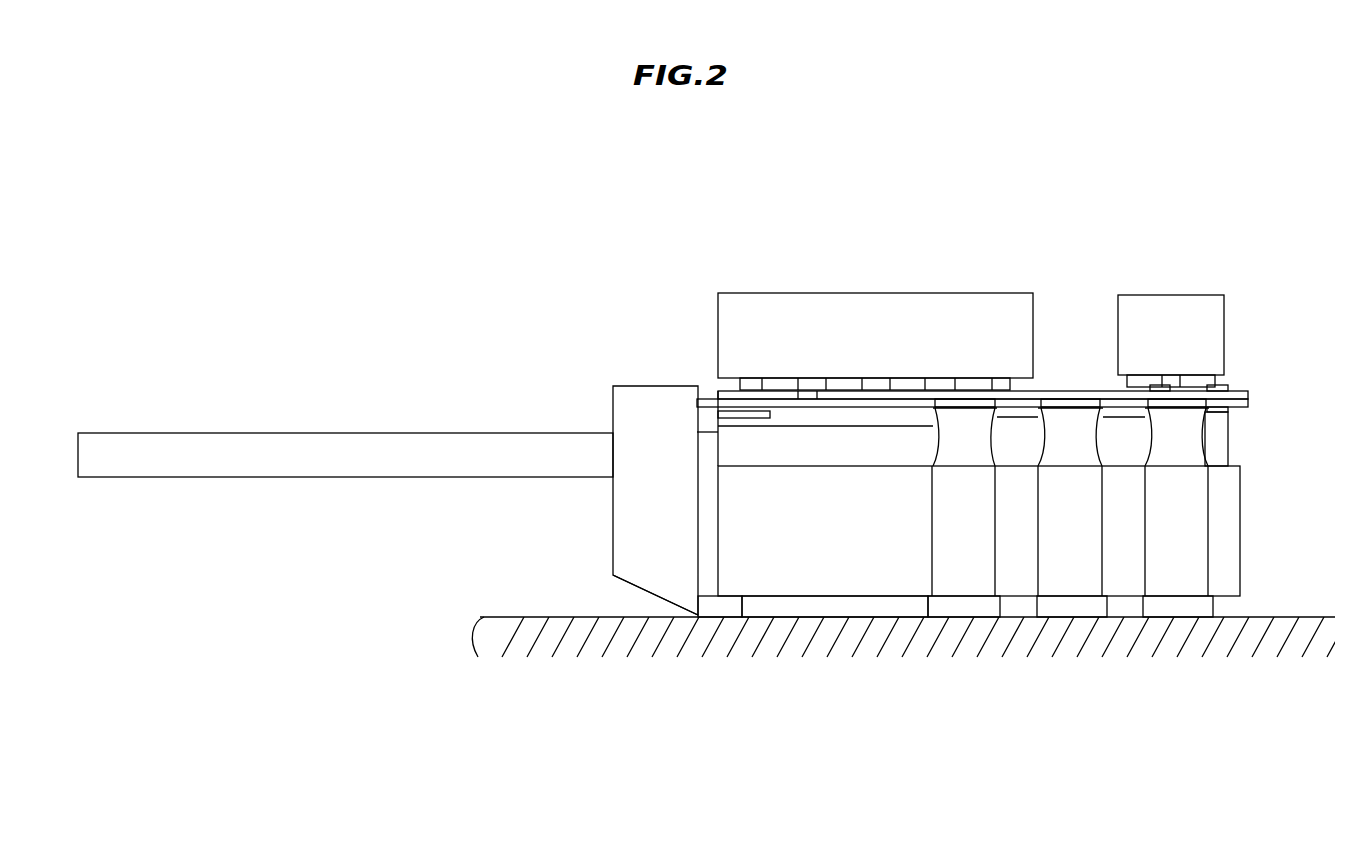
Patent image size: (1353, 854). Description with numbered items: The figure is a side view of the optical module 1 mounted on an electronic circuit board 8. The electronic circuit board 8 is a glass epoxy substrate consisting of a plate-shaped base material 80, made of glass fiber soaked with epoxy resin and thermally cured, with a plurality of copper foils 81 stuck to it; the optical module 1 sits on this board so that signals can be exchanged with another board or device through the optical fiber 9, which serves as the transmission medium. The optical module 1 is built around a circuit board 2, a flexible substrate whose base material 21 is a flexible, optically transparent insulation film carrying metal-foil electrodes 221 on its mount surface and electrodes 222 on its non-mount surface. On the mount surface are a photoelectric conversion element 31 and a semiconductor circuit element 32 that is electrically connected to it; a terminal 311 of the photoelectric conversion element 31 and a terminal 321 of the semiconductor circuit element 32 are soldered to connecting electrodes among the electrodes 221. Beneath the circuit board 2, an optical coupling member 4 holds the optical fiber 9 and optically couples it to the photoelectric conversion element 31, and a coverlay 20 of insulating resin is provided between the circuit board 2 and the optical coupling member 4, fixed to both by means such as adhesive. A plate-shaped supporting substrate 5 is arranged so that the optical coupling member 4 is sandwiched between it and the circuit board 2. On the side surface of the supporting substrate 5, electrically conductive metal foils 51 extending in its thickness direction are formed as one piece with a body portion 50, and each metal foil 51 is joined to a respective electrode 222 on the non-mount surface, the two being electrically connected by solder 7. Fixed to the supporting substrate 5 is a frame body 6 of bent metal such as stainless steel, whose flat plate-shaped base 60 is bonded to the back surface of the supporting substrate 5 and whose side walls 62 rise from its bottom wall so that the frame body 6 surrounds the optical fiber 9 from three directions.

The optical module 1 is at (1262, 237).
The circuit board 2 is at (714, 381).
The coverlay 20 is at (1218, 413).
The base material 21 is at (1237, 397).
The electrodes 221 is at (842, 393).
The electrodes 222 is at (967, 410).
The photoelectric conversion element 31 is at (1180, 292).
The terminal 311 is at (1150, 380).
The semiconductor circuit element 32 is at (742, 291).
The terminal 321 is at (945, 388).
The optical coupling member 4 is at (1218, 435).
The supporting substrate 5 is at (1029, 531).
The body portion 50 is at (1227, 565).
The metal foils 51 is at (968, 570).
The frame body 6 is at (619, 374).
The base 60 is at (800, 603).
The side walls 62 is at (625, 523).
The solder 7 is at (1178, 438).
The electronic circuit board 8 is at (764, 625).
The plate-shaped base material 80 is at (1262, 625).
The copper foils 81 is at (1178, 603).
The optical fiber 9 is at (170, 440).